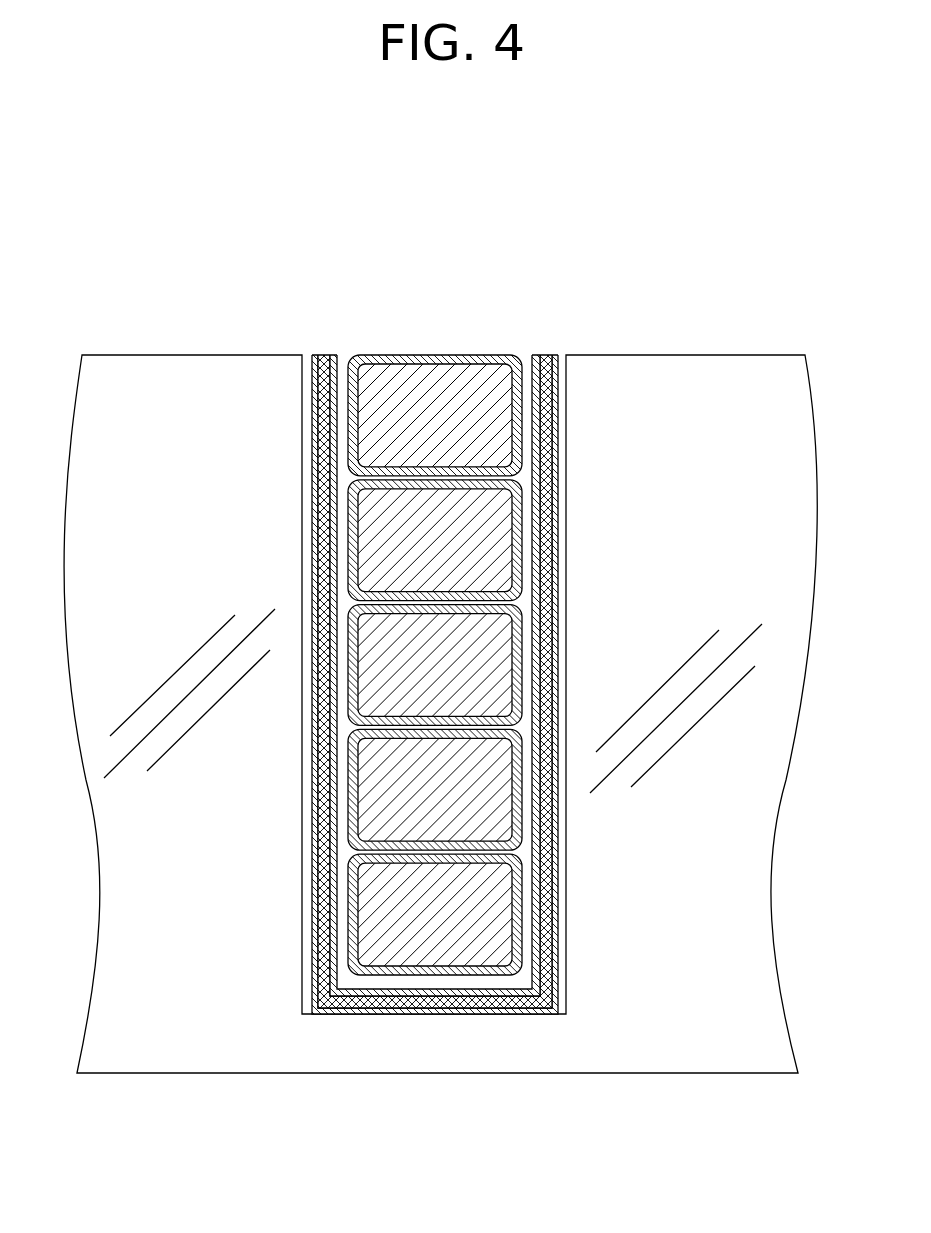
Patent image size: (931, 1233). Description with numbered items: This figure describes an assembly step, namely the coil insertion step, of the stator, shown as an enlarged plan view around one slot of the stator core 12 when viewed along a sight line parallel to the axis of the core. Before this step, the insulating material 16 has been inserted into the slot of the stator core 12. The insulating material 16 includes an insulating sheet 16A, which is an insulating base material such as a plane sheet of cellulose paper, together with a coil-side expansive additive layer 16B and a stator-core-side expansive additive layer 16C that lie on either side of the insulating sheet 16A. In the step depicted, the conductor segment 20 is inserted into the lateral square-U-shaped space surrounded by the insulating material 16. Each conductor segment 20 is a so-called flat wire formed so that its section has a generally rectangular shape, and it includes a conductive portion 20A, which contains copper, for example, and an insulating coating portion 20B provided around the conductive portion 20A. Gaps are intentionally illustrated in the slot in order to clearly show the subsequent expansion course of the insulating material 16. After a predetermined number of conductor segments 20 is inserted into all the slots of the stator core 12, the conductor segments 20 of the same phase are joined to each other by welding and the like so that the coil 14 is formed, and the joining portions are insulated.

The stator core 12 is at (212, 380).
The coil 14 is at (435, 590).
The insulating material 16 is at (660, 210).
The insulating sheet 16A is at (542, 353).
The coil-side expansive additive layer 16B is at (532, 353).
The stator-core-side expansive additive layer 16C is at (553, 353).
The conductor segment 20 is at (493, 262).
The conductive portion 20A is at (478, 382).
The insulating coating portion 20B is at (437, 357).